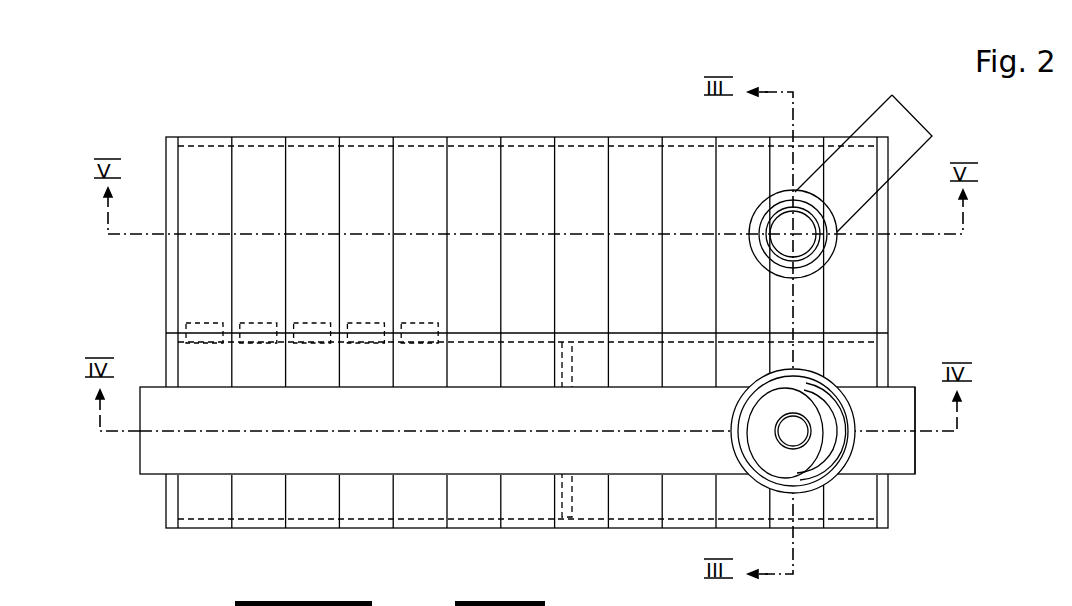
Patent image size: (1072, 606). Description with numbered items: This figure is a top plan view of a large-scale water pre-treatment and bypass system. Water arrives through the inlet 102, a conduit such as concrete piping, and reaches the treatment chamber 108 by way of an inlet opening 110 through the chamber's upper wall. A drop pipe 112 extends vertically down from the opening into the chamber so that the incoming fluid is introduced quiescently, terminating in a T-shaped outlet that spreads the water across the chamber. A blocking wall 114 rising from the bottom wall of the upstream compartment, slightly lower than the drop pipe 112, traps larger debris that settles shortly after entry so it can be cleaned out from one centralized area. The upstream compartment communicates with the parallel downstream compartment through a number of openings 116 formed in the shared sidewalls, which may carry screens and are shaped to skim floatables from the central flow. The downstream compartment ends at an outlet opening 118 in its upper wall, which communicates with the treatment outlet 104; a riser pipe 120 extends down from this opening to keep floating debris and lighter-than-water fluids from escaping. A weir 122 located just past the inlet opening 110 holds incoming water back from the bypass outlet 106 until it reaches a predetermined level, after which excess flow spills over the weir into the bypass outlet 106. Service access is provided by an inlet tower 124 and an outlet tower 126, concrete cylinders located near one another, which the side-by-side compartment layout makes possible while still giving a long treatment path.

The inlet 102 is at (152, 452).
The treatment outlet 104 is at (908, 125).
The bypass outlet 106 is at (905, 453).
The treatment chamber 108 is at (408, 137).
The inlet opening 110 is at (800, 437).
The drop pipe 112 is at (785, 442).
The blocking wall 114 is at (572, 458).
The openings 116 is at (207, 323).
The outlet opening 118 is at (803, 247).
The riser pipe 120 is at (780, 220).
The weir 122 is at (820, 452).
The inlet tower 124 is at (762, 480).
The outlet tower 126 is at (817, 202).